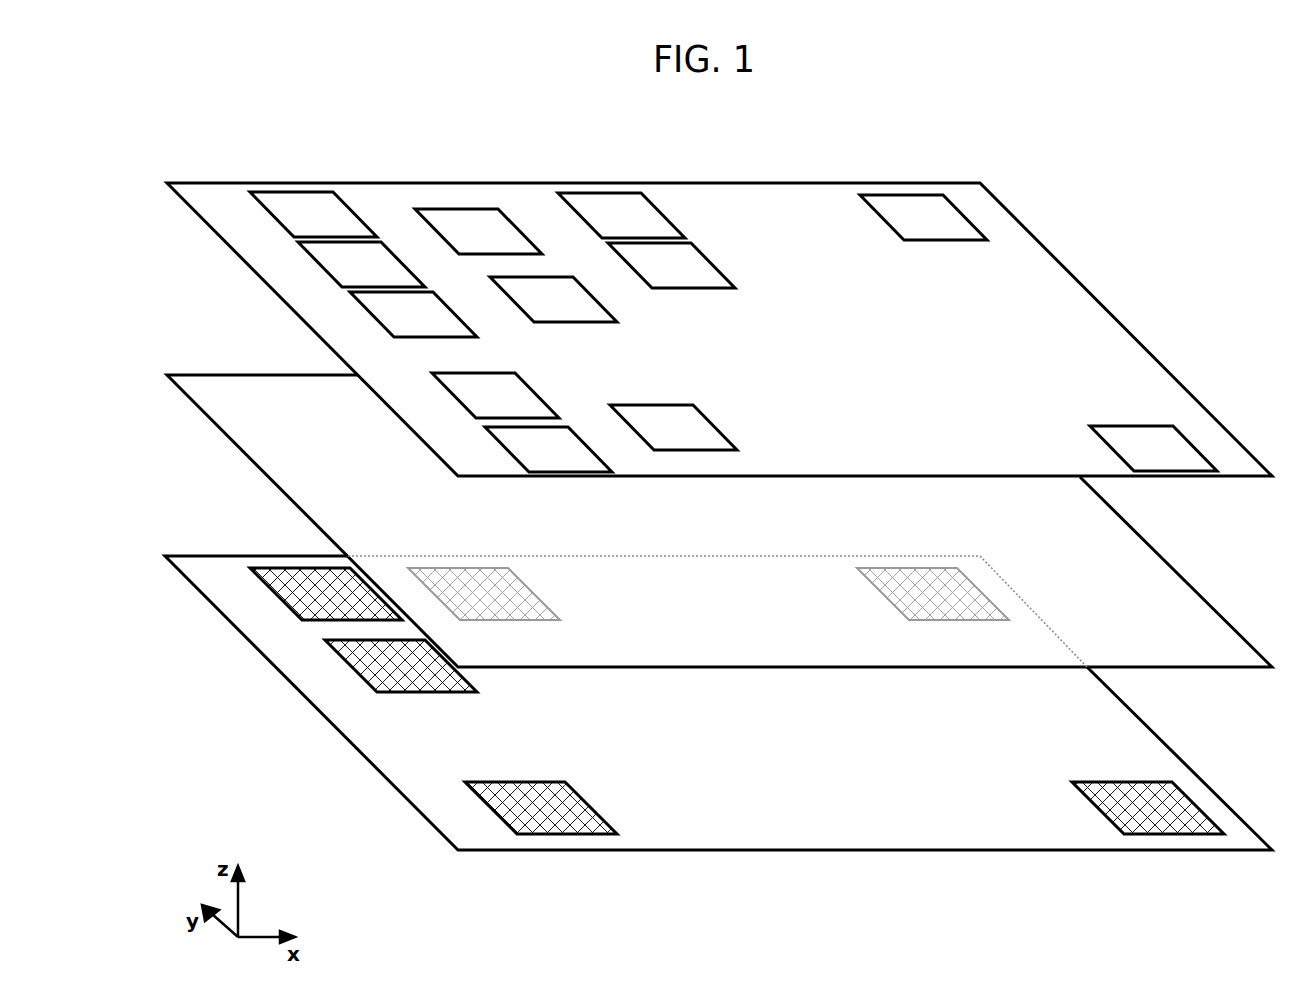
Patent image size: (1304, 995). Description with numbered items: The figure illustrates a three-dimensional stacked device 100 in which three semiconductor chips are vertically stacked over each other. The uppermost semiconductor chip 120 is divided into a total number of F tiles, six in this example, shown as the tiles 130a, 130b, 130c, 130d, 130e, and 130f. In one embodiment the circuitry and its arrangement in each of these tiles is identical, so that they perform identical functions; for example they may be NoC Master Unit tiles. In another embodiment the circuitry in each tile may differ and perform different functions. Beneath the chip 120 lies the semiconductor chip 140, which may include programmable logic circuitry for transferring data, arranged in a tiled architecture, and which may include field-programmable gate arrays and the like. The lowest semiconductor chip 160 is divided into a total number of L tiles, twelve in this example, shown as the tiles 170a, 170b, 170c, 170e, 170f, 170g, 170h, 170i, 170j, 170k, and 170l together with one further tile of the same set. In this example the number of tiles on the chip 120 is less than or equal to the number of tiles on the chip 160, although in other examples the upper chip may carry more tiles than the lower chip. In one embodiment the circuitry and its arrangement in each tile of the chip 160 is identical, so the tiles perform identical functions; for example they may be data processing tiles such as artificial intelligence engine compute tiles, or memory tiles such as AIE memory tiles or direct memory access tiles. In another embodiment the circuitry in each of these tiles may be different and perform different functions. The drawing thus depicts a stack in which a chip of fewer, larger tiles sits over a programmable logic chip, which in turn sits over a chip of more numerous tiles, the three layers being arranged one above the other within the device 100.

The 3D stacked device 100 is at (1050, 110).
The semiconductor chip 120 is at (1127, 701).
The semiconductor chip 140 is at (1123, 518).
The semiconductor chip 160 is at (1128, 331).
The tile 130a is at (298, 607).
The tile 130b is at (456, 607).
The tile 130c is at (905, 607).
The tile 130d is at (373, 679).
The tile 130e is at (513, 821).
The tile 130f is at (1120, 821).
The tile 170a is at (289, 224).
The tile 170b is at (454, 241).
The tile 170c is at (597, 225).
The tile 170e is at (337, 274).
The tile 170f is at (529, 309).
The tile 170g is at (647, 275).
The tile 170h is at (389, 324).
The tile 170i is at (471, 405).
The tile 170j is at (524, 459).
The tile 170k is at (649, 437).
The tile 170l is at (1129, 458).